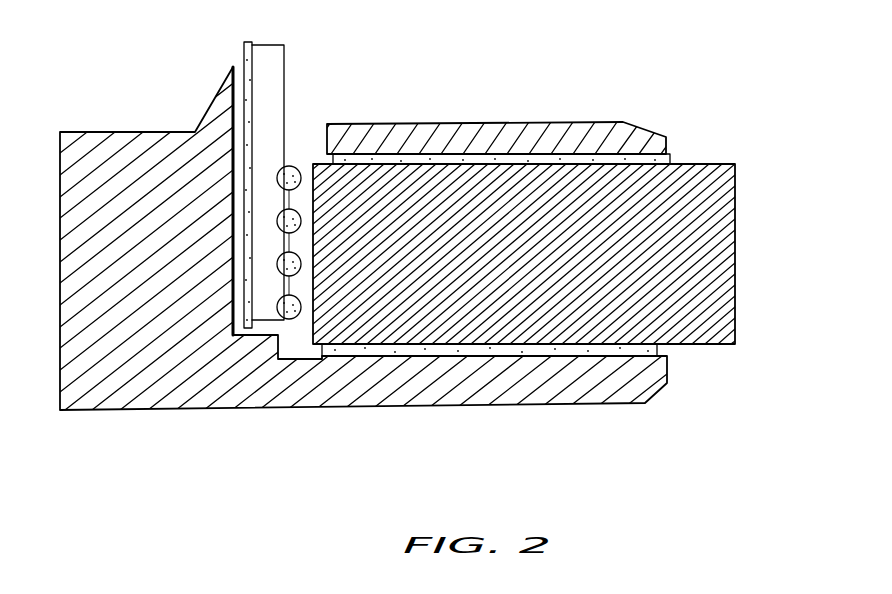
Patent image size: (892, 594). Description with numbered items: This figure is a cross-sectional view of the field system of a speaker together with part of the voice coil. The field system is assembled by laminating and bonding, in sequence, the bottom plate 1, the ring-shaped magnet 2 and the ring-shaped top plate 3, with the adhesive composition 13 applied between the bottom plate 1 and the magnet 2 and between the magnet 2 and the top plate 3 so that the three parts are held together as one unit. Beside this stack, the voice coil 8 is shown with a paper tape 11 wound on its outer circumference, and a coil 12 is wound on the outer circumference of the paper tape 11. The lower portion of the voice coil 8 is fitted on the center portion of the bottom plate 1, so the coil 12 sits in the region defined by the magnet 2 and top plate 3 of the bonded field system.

The bottom plate 1 is at (607, 404).
The magnet 2 is at (736, 263).
The top plate 3 is at (633, 126).
The voice coil 8 is at (252, 87).
The paper tape 11 is at (272, 310).
The coil 12 is at (290, 167).
The adhesive composition 13 is at (672, 157).